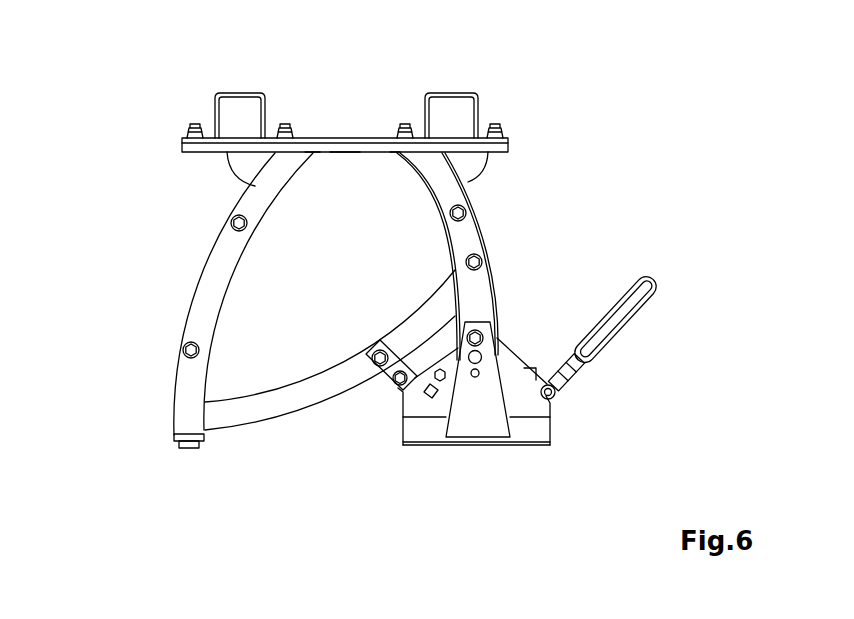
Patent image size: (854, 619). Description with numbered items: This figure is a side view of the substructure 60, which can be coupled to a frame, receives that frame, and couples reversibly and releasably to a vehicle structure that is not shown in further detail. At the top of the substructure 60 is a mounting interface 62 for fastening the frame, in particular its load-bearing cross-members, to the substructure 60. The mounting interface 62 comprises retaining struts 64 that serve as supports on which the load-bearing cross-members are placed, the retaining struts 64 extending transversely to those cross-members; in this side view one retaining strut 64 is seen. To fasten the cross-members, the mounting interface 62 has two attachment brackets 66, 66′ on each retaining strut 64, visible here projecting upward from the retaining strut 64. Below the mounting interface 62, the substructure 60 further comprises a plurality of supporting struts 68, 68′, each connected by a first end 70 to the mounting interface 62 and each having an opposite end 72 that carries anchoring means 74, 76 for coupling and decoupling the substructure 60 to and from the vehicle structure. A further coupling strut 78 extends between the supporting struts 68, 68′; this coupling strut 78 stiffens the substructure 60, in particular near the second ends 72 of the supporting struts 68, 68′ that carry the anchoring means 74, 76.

The substructure 60 is at (722, 151).
The mounting interface 62 is at (345, 104).
The retaining strut 64 is at (372, 150).
The attachment bracket 66 is at (232, 93).
The attachment bracket 66′ is at (475, 93).
The supporting strut 68 is at (215, 277).
The supporting strut 68′ is at (473, 240).
The first end 70 is at (388, 158).
The opposite end 72 is at (516, 322).
The anchoring means 74 is at (184, 448).
The anchoring means 76 is at (520, 435).
The coupling strut 78 is at (300, 393).